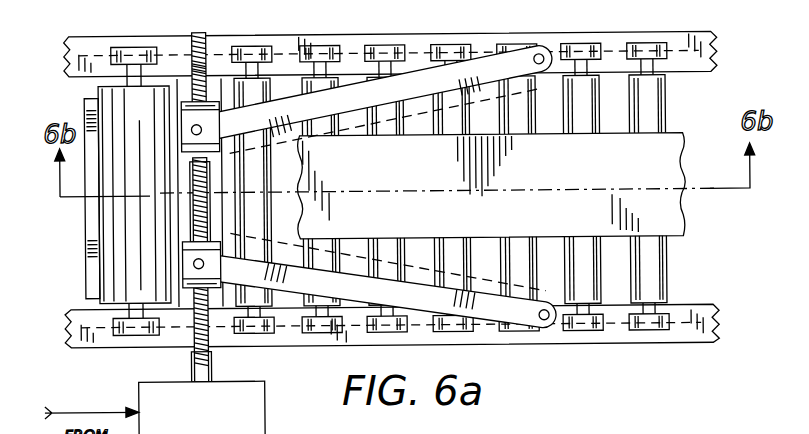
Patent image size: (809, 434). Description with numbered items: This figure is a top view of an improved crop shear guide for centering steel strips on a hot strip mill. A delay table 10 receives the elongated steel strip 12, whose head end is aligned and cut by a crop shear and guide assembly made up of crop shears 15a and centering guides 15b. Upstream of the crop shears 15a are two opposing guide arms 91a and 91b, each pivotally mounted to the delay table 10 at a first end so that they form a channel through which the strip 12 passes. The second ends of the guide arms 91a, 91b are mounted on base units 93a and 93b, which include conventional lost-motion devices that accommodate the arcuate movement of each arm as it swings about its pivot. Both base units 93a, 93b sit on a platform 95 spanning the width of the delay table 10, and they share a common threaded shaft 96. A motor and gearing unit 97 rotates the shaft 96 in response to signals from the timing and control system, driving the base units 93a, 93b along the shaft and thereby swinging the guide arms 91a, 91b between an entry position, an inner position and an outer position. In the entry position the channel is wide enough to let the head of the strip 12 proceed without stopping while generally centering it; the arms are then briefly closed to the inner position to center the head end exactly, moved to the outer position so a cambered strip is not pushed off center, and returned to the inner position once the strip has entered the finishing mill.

The delay table 10 is at (476, 26).
The steel strip 12 is at (638, 173).
The crop shears 15a is at (118, 101).
The centering guides 15b is at (190, 200).
The guide arm 91a is at (284, 102).
The guide arm 91b is at (546, 321).
The base unit 93a is at (184, 118).
The base unit 93b is at (186, 270).
The platform 95 is at (191, 35).
The threaded shaft 96 is at (192, 372).
The motor and gearing unit 97 is at (262, 382).